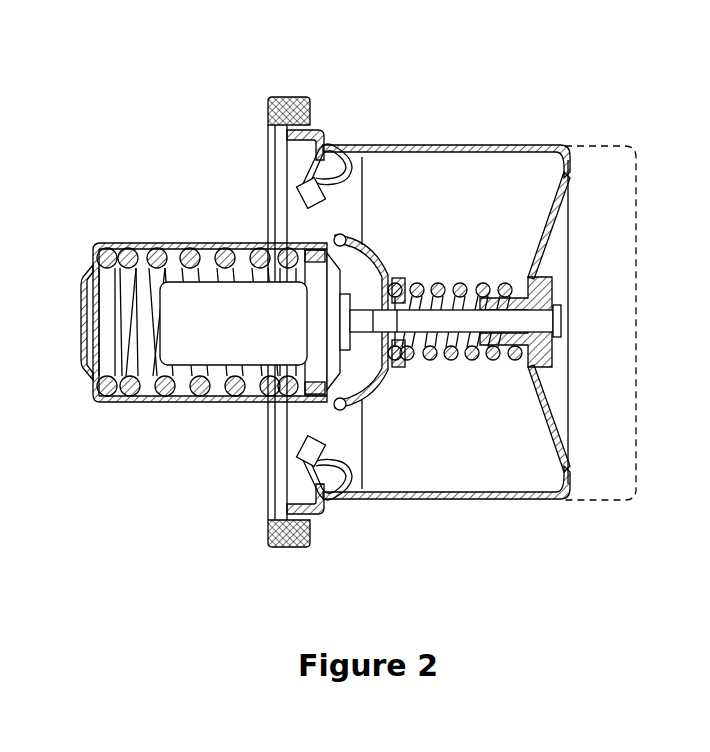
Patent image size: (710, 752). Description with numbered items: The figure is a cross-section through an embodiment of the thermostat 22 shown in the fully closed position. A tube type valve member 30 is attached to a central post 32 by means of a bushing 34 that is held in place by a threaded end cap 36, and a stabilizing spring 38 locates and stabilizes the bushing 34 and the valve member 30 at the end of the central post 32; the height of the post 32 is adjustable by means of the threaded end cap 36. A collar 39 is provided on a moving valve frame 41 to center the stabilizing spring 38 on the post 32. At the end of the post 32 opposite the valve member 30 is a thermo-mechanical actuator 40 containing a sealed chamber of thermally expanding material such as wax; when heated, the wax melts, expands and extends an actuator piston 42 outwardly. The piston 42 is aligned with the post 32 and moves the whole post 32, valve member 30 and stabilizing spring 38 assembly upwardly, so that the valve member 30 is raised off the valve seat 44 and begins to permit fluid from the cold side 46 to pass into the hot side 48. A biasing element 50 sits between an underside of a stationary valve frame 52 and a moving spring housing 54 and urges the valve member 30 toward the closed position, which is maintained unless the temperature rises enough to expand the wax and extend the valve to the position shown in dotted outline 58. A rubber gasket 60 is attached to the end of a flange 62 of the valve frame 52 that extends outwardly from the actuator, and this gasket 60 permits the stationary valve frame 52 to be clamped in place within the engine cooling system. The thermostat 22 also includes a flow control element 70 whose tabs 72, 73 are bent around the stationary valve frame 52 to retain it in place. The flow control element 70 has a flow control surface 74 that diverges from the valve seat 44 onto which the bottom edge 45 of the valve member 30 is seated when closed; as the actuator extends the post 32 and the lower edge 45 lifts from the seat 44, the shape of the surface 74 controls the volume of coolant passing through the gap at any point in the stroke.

The thermostat 22 is at (463, 99).
The valve member 30 is at (455, 500).
The central post 32 is at (455, 322).
The bushing 34 is at (553, 292).
The threaded end cap 36 is at (561, 330).
The stabilizing spring 38 is at (430, 358).
The collar 39 is at (410, 363).
The thermo-mechanical actuator 40 is at (200, 300).
The moving valve frame 41 is at (417, 420).
The actuator piston 42 is at (469, 303).
The valve seat 44 is at (321, 354).
The bottom edge 45 is at (333, 148).
The cold side 46 is at (446, 325).
The hot side 48 is at (506, 190).
The biasing element 50 is at (204, 315).
The stationary valve frame 52 is at (313, 473).
The moving spring housing 54 is at (143, 256).
The dotted outline 58 is at (637, 320).
The rubber gasket 60 is at (295, 547).
The flange 62 is at (312, 527).
The flow control element 70 is at (332, 176).
The tab 72 is at (308, 190).
The tab 73 is at (308, 446).
The flow control surface 74 is at (353, 148).